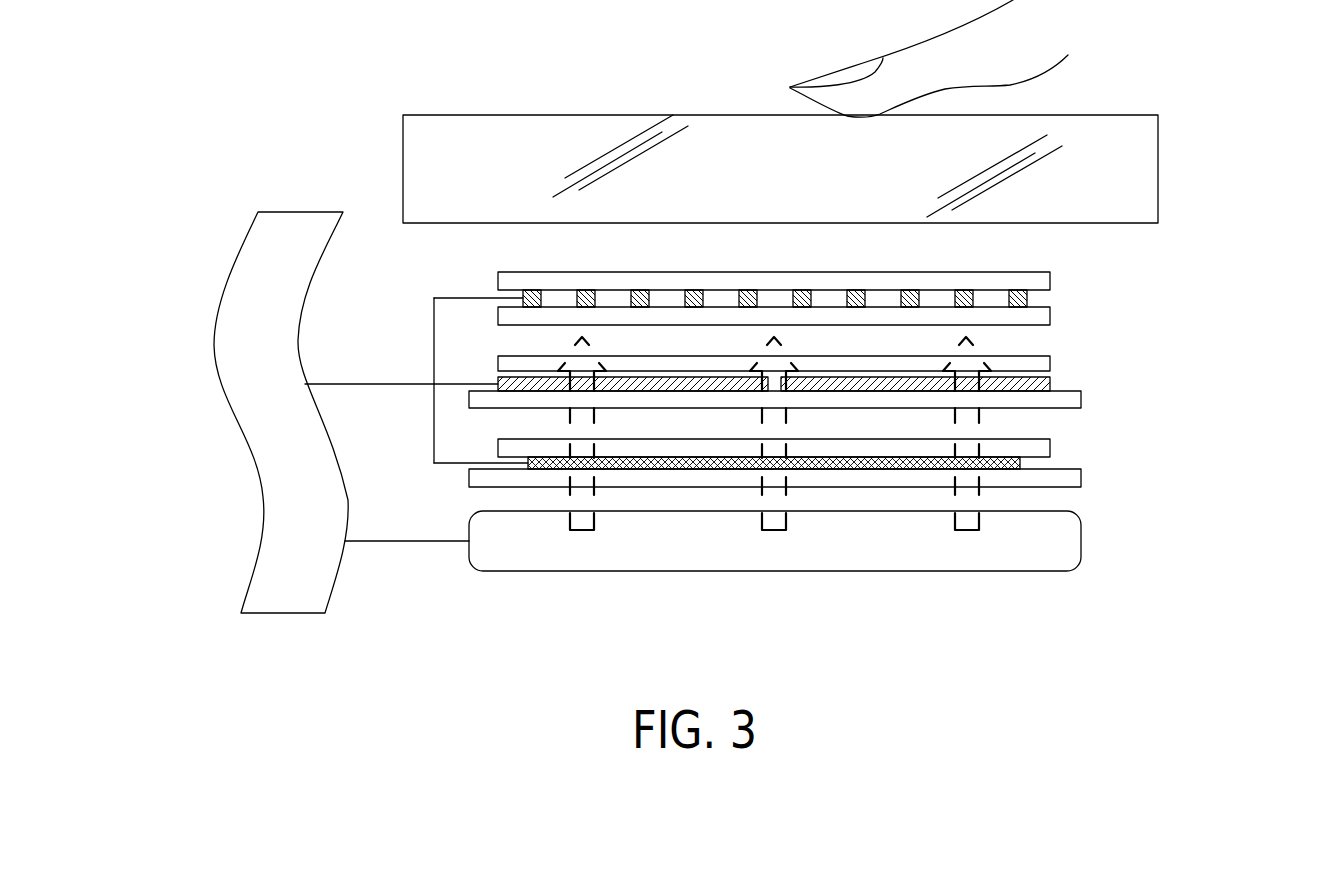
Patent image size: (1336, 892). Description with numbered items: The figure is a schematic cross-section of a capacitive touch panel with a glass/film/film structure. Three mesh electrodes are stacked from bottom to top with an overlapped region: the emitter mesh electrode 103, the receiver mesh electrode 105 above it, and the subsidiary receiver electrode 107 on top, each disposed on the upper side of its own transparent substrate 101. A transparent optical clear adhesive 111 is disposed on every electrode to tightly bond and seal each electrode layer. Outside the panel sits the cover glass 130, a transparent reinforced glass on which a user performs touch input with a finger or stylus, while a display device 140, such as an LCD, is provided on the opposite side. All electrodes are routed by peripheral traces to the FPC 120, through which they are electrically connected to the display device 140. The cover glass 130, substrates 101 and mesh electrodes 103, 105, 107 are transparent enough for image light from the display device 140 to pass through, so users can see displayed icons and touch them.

The transparent substrate 101 is at (1050, 316).
The emitter mesh electrode 103 is at (1020, 463).
The receiver mesh electrode 105 is at (1027, 298).
The subsidiary receiver electrode 107 is at (1050, 384).
The transparent optical clear adhesive 111 is at (1050, 280).
The FPC 120 is at (305, 212).
The cover glass 130 is at (1158, 162).
The display device 140 is at (1081, 545).